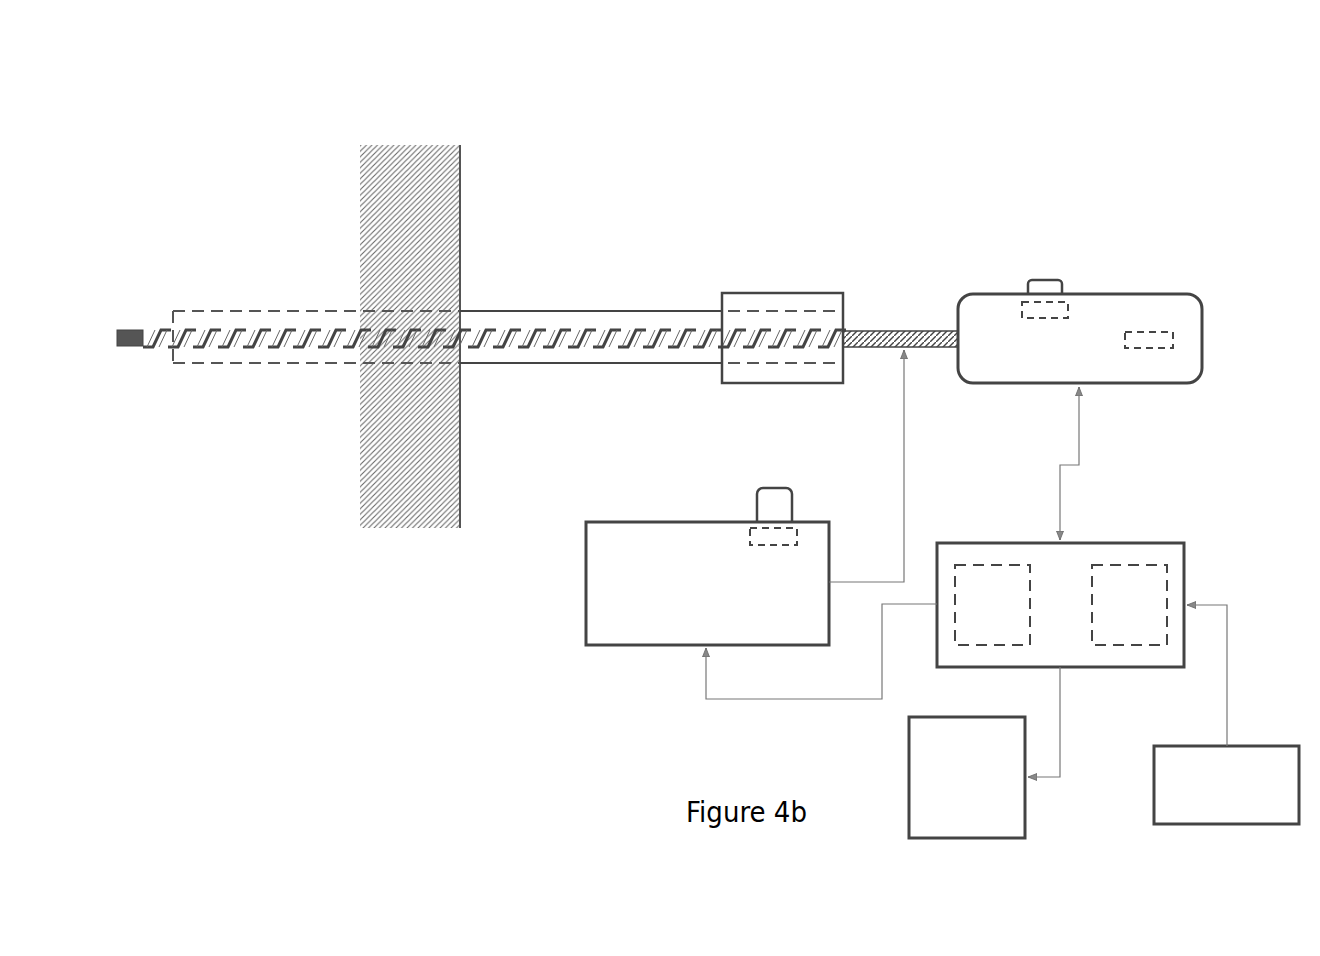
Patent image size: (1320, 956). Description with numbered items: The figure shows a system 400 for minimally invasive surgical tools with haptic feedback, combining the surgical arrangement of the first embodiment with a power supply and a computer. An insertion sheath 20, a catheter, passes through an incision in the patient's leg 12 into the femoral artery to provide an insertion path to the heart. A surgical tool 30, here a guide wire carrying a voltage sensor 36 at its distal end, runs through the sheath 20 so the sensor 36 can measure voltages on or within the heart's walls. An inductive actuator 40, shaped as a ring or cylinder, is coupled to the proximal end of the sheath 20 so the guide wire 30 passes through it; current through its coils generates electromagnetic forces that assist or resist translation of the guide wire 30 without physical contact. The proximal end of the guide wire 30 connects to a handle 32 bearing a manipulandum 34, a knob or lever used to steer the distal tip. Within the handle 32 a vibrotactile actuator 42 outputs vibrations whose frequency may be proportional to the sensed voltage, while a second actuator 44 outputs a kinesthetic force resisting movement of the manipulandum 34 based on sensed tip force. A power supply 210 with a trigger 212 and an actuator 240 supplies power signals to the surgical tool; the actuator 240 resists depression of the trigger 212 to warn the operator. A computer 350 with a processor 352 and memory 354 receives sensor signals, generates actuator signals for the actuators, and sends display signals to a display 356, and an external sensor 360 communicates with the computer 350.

The patient's leg 12 is at (414, 124).
The system 400 is at (1086, 154).
The voltage sensor 36 is at (128, 330).
The insertion sheath 20 is at (592, 310).
The inductive actuator 40 is at (783, 293).
The surgical tool 30 is at (902, 331).
The handle 32 is at (1067, 353).
The manipulandum 34 is at (1045, 280).
The second actuator 44 is at (1068, 310).
The vibrotactile actuator 42 is at (1150, 332).
The power supply 210 is at (688, 600).
The trigger 212 is at (772, 488).
The actuator 240 is at (797, 537).
The computer 350 is at (1041, 618).
The processor 352 is at (973, 618).
The memory 354 is at (1109, 618).
The display 356 is at (947, 791).
The external sensor 360 is at (1208, 800).